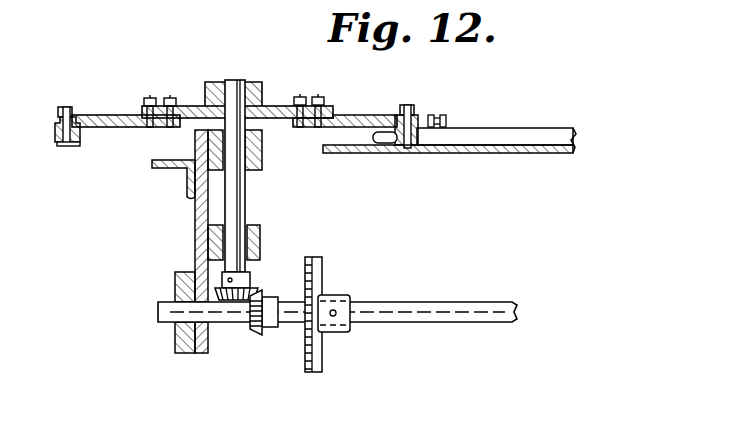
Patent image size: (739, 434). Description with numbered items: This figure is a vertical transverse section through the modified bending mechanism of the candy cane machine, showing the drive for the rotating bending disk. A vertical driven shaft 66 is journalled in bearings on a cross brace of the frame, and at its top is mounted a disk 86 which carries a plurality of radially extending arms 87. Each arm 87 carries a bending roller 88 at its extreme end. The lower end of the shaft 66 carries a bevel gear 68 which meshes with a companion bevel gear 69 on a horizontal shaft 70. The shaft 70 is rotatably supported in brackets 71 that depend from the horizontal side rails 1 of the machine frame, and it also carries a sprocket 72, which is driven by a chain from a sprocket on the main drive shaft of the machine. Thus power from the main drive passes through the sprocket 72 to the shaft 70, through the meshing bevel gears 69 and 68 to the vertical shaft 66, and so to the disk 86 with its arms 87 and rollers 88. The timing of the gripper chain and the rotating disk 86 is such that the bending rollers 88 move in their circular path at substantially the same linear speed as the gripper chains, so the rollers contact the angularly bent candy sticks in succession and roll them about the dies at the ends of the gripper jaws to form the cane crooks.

The horizontal side rail 1 is at (173, 170).
The driven shaft 66 is at (240, 79).
The bevel gear 68 is at (256, 290).
The companion bevel gear 69 is at (268, 324).
The shaft 70 is at (462, 312).
The bracket 71 is at (195, 228).
The sprocket 72 is at (324, 297).
The disk 86 is at (286, 106).
The radially extending arm 87 is at (110, 127).
The bending roller 88 is at (56, 141).